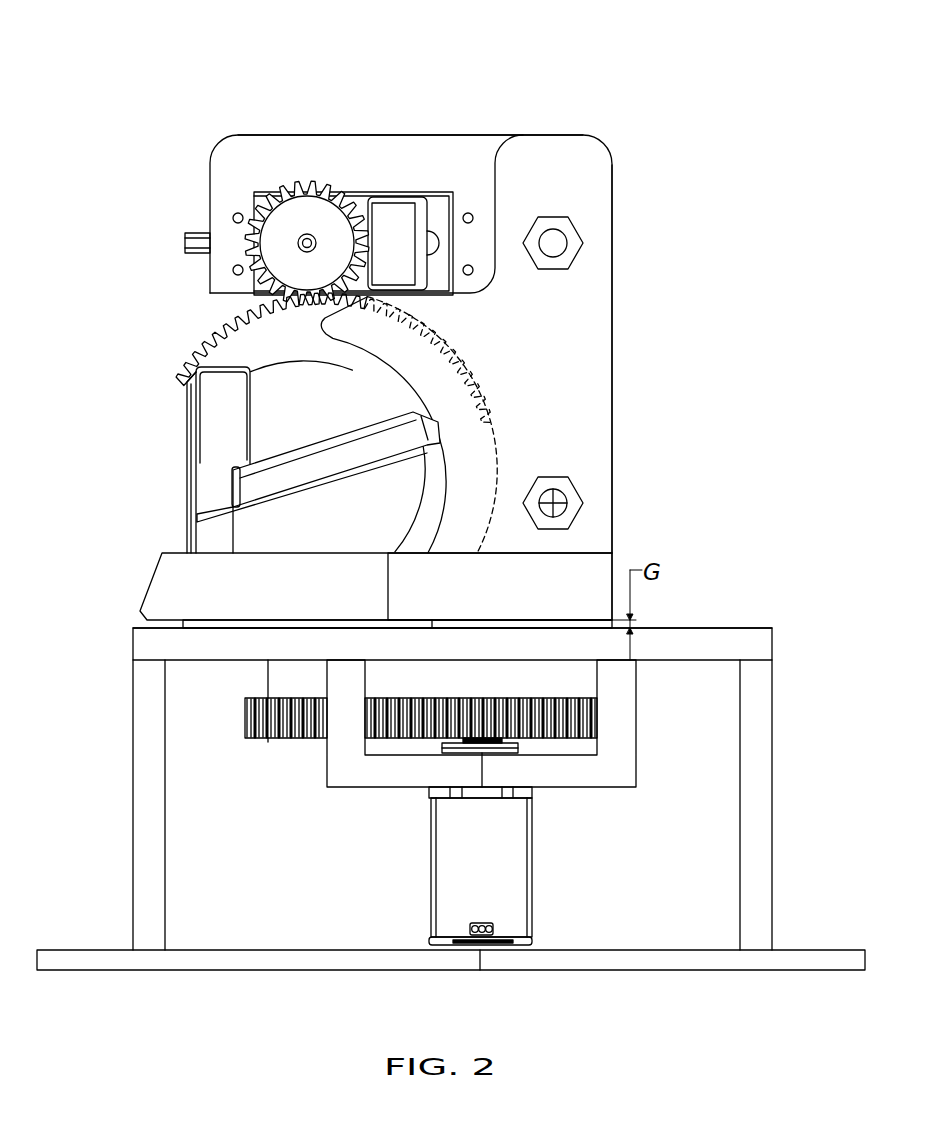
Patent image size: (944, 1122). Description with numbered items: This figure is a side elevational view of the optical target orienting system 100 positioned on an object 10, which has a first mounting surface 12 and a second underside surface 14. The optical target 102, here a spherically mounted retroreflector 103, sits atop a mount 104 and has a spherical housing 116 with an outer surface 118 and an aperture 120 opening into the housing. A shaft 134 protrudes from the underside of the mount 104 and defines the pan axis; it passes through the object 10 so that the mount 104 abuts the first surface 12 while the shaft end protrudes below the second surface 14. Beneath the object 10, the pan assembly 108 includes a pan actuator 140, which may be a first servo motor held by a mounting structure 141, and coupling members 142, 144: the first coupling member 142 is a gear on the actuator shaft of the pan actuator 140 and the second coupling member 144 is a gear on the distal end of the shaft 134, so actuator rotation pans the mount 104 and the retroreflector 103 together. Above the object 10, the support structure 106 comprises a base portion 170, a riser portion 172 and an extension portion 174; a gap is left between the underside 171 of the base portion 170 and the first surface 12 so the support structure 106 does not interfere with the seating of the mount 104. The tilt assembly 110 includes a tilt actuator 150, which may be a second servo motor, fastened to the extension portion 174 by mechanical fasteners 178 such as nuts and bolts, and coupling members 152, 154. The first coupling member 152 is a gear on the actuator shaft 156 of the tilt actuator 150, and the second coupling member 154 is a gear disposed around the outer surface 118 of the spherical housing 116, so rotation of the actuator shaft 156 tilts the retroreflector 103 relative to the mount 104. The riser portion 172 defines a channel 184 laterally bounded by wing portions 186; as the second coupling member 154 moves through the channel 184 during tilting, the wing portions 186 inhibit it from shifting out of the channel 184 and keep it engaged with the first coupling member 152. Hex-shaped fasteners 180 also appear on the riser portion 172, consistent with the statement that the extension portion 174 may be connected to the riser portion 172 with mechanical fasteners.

The object 10 is at (720, 645).
The first surface 12 is at (678, 628).
The second surface 14 is at (682, 660).
The optical target orienting system 100 is at (672, 110).
The optical target 102 is at (268, 403).
The spherically mounted retroreflector 103 is at (268, 433).
The mount 104 is at (220, 625).
The support structure 106 is at (603, 347).
The pan assembly 108 is at (352, 812).
The tilt assembly 110 is at (219, 149).
The spherical housing 116 is at (385, 500).
The outer surface 118 is at (282, 535).
The aperture 120 is at (187, 441).
The shaft 134 is at (280, 690).
The pan actuator 140 is at (533, 870).
The mounting structure 141 is at (625, 788).
The first coupling member 142 is at (570, 728).
The second coupling member 144 is at (268, 740).
The tilt actuator 150 is at (363, 202).
The first coupling member 152 is at (302, 200).
The second coupling member 154 is at (212, 335).
The actuator shaft 156 is at (316, 241).
The base portion 170 is at (402, 575).
The underside 171 is at (462, 623).
The riser portion 172 is at (602, 293).
The extension portion 174 is at (440, 135).
The mechanical fasteners 178 is at (233, 216).
The hex nut fastener 180 is at (584, 243).
The channel 184 is at (493, 437).
The wing portions 186 is at (377, 346).